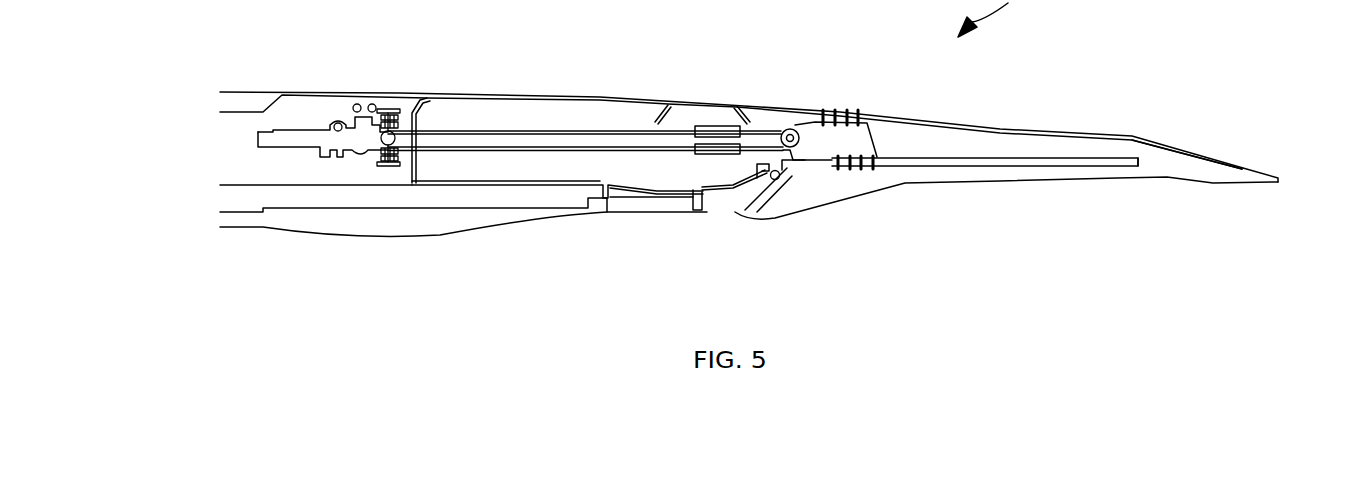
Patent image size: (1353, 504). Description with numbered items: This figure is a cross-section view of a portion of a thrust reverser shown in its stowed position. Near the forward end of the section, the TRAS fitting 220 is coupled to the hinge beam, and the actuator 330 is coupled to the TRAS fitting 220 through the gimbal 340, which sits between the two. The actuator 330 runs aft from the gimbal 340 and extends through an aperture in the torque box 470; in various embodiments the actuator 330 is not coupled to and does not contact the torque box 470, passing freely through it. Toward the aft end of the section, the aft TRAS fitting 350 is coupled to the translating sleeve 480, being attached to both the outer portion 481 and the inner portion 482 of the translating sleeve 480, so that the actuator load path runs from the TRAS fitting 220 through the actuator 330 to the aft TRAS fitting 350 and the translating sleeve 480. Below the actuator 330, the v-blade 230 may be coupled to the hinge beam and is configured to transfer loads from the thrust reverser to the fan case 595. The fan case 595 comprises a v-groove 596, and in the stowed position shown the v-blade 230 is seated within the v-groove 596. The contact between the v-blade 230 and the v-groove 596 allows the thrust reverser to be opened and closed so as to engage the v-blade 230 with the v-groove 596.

The TRAS fitting 220 is at (388, 103).
The v-blade 230 is at (712, 197).
The actuator 330 is at (552, 128).
The gimbal 340 is at (377, 157).
The aft TRAS fitting 350 is at (878, 128).
The torque box 470 is at (417, 167).
The translating sleeve 480 is at (1045, 238).
The outer portion 481 is at (1013, 128).
The inner portion 482 is at (940, 186).
The fan case 595 is at (383, 233).
The v-groove 596 is at (707, 192).